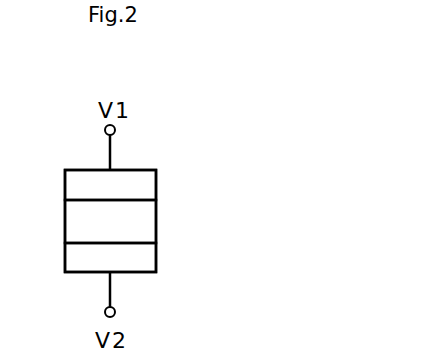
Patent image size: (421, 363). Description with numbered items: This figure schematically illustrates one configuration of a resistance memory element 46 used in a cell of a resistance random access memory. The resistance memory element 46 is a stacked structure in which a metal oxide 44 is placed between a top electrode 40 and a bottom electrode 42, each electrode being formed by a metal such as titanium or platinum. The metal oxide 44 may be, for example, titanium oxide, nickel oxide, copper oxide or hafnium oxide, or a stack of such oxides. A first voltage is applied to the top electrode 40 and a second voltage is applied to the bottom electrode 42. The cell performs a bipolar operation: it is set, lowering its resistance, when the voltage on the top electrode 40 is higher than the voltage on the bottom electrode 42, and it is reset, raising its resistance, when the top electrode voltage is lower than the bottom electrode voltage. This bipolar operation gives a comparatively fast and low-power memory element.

The resistance memory element 46 is at (157, 132).
The top electrode 40 is at (157, 177).
The metal oxide 44 is at (157, 218).
The bottom electrode 42 is at (157, 255).